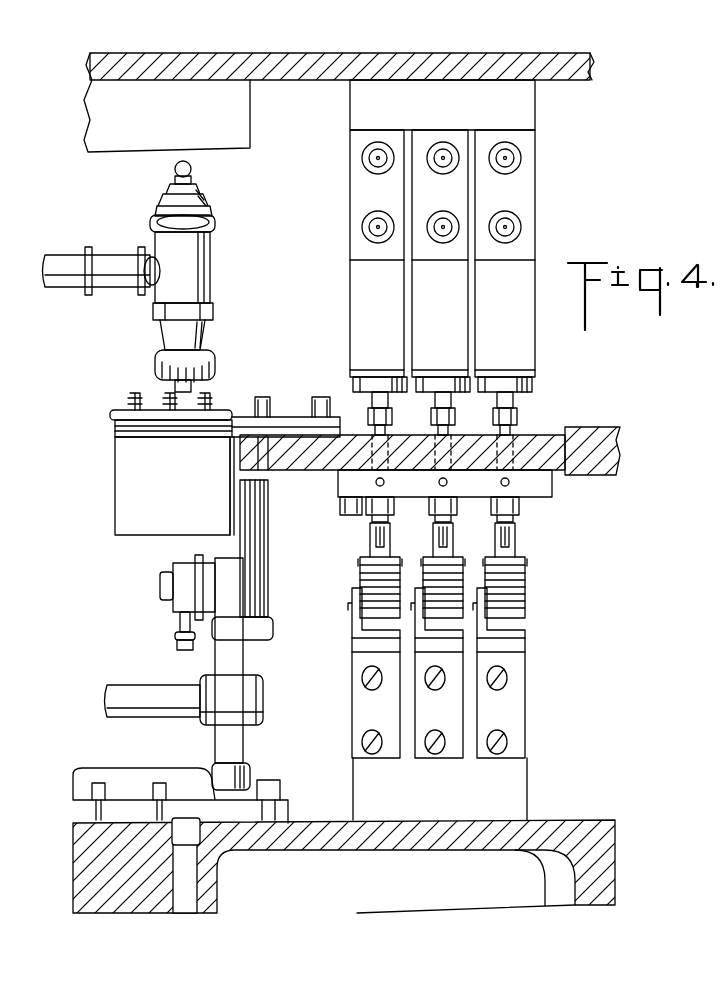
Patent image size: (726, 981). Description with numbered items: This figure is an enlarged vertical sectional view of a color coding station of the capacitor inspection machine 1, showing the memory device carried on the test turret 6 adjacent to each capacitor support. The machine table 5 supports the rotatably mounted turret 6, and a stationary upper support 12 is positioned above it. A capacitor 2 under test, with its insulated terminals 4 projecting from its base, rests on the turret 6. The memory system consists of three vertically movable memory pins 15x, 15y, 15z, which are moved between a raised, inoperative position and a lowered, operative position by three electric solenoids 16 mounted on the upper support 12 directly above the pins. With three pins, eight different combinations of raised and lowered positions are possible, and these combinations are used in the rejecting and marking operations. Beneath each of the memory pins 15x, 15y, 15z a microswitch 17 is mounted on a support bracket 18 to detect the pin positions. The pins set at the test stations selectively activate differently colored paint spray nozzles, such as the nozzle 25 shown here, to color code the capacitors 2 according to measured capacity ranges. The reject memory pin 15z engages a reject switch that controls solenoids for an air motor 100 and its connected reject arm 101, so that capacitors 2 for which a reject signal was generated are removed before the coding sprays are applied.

The capacitor inspection machine 1 is at (573, 176).
The capacitor 2 is at (165, 492).
The insulated terminal 4 is at (208, 398).
The machine table 5 is at (522, 835).
The test turret 6 is at (546, 440).
The stationary upper support 12 is at (446, 60).
The memory pin 15x is at (516, 420).
The memory pin 15y is at (441, 415).
The reject memory pin 15z is at (374, 418).
The electric solenoid 16 is at (519, 270).
The microswitch 17 is at (514, 596).
The support bracket 18 is at (512, 700).
The paint spray nozzle 25 is at (208, 275).
The air motor 100 is at (137, 697).
The reject arm 101 is at (262, 585).